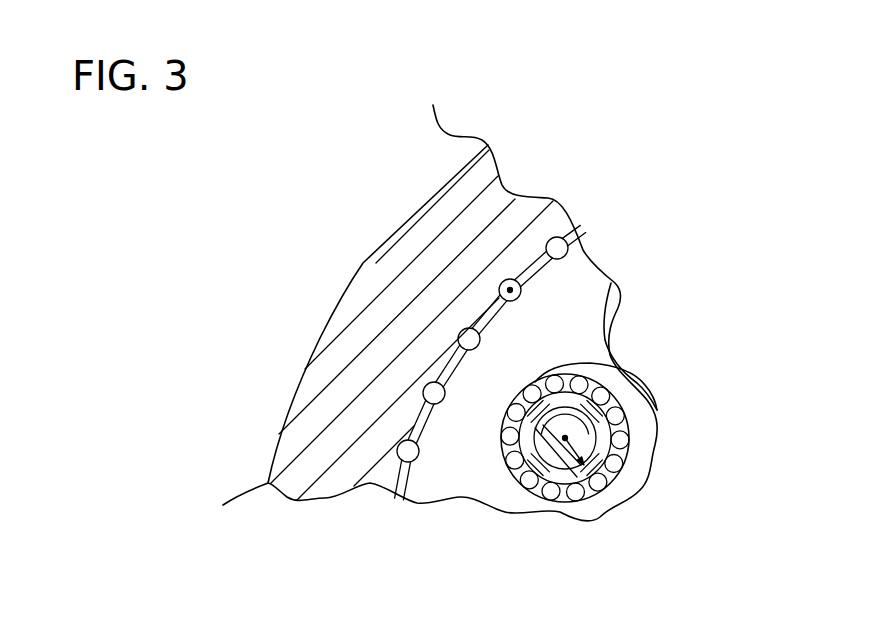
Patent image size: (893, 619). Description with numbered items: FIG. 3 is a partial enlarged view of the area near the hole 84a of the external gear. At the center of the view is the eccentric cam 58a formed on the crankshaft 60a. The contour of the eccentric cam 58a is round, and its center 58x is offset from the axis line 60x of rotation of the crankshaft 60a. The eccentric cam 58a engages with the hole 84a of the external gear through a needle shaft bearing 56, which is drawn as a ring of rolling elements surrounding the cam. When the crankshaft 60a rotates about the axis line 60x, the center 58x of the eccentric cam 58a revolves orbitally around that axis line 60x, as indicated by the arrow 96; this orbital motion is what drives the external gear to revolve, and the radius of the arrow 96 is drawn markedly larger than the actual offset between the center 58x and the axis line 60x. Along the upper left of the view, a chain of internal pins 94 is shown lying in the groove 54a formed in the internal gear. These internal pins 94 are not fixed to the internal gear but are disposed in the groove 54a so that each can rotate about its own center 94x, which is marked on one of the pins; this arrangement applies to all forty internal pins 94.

The internal pin 94 is at (508, 279).
The groove 54a is at (501, 281).
The center of the internal pin 94x is at (504, 285).
The needle shaft bearing 56 is at (533, 390).
The eccentric cam 58a is at (540, 413).
The arrow 96 is at (640, 378).
The center of the eccentric cam 58x is at (620, 402).
The axis line of rotation of the crankshaft 60x is at (605, 455).
The hole 84a is at (505, 452).
The crankshaft 60a is at (558, 480).